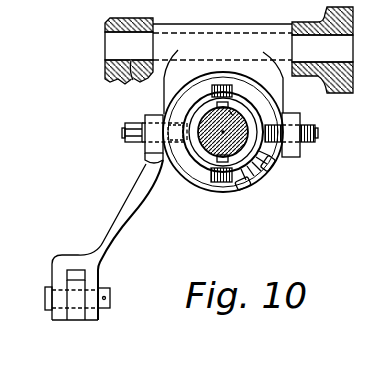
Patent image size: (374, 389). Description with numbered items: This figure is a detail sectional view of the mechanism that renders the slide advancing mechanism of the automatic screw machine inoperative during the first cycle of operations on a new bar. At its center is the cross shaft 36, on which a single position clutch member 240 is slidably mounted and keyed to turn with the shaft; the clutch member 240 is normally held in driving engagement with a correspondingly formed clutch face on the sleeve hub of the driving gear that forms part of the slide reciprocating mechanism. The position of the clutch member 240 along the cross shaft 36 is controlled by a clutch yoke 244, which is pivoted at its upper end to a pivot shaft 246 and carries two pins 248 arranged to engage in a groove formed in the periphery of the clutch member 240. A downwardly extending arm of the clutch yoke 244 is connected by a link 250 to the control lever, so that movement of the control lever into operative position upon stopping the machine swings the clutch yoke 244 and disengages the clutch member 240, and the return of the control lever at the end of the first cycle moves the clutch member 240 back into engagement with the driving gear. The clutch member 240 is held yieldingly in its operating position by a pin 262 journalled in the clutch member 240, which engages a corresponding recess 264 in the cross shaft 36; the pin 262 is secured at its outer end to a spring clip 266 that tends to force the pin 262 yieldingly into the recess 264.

The cross shaft 36 is at (245, 90).
The single position clutch member 240 is at (218, 86).
The clutch yoke 244 is at (132, 214).
The pivot shaft 246 is at (137, 47).
The pins 248 is at (276, 162).
The link 250 is at (73, 280).
The pin 262 is at (150, 176).
The recess 264 is at (185, 160).
The spring clip 266 is at (208, 188).